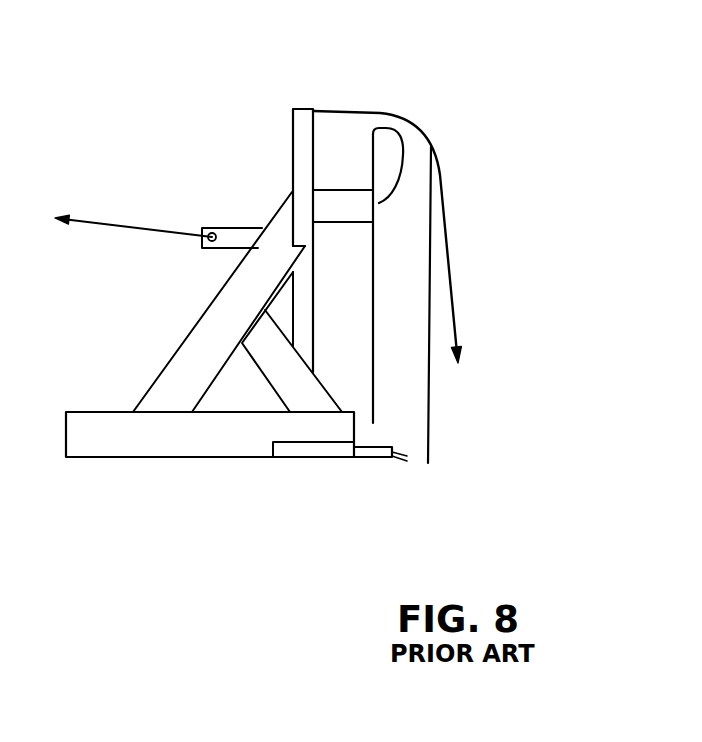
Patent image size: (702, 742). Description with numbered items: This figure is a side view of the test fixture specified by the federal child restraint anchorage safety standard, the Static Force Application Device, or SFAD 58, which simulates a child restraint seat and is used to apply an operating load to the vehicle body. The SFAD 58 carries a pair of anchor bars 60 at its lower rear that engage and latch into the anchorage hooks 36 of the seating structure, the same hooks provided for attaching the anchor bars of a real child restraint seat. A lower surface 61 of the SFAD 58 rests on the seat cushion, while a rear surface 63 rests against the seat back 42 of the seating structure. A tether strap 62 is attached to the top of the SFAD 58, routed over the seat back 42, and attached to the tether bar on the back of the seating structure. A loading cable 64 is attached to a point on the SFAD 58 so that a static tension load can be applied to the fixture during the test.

The Static Force Application Device (SFAD) 58 is at (280, 128).
The tether strap 62 is at (455, 298).
The seat back 42 is at (407, 215).
The rear surface 63 is at (403, 132).
The loading cable 64 is at (143, 229).
The anchorage hooks 36 is at (407, 433).
The lower surface 61 is at (122, 460).
The anchor bars 60 is at (368, 458).